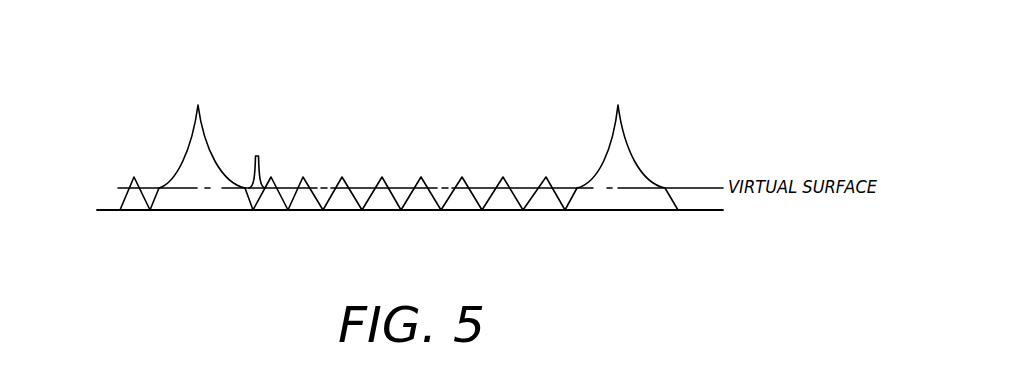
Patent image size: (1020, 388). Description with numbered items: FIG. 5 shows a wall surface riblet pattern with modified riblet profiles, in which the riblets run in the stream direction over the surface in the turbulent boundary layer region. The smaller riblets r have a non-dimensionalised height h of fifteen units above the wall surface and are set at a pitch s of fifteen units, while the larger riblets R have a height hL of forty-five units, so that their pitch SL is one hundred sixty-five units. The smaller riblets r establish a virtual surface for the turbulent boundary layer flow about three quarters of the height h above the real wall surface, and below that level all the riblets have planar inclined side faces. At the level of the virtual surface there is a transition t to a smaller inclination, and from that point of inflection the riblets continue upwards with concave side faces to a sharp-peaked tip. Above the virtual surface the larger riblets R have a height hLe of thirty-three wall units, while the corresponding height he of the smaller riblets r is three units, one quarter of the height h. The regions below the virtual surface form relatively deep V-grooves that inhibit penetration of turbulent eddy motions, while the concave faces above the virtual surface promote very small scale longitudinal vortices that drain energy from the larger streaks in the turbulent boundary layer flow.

The larger riblets R is at (603, 210).
The smaller riblets r is at (507, 210).
The transition t is at (257, 160).
The height of larger riblets above the virtual wall surface hLe is at (150, 188).
The height of larger riblets hL is at (700, 210).
The pitch of larger riblets SL is at (613, 68).
The height of smaller riblets h is at (128, 175).
The pitch of smaller riblets s is at (342, 225).
The height of smaller riblets above the virtual wall surface he is at (565, 188).